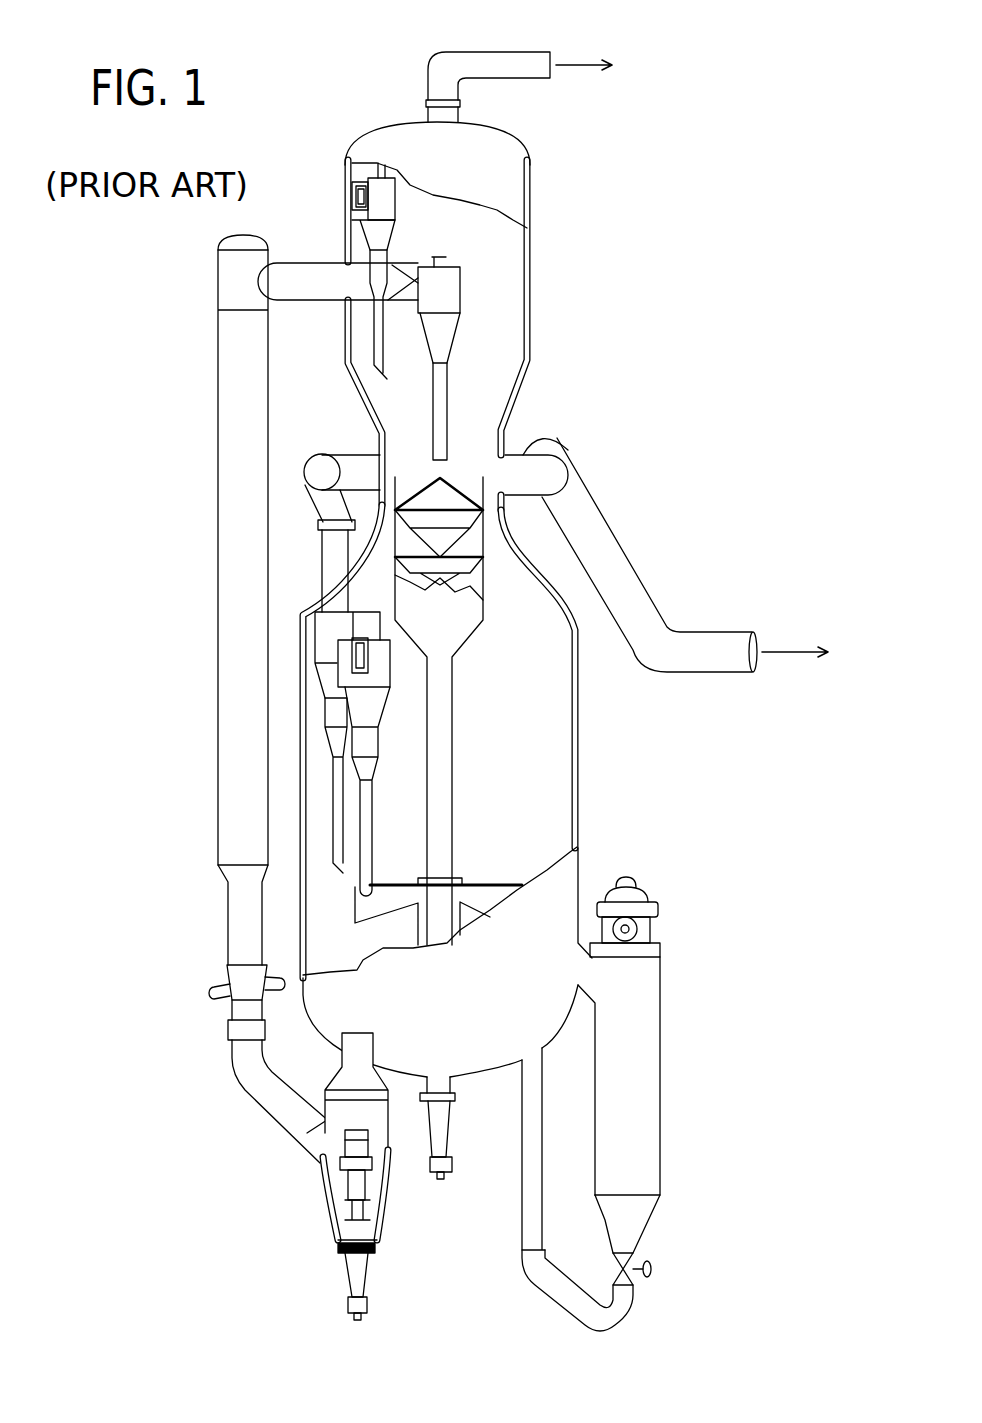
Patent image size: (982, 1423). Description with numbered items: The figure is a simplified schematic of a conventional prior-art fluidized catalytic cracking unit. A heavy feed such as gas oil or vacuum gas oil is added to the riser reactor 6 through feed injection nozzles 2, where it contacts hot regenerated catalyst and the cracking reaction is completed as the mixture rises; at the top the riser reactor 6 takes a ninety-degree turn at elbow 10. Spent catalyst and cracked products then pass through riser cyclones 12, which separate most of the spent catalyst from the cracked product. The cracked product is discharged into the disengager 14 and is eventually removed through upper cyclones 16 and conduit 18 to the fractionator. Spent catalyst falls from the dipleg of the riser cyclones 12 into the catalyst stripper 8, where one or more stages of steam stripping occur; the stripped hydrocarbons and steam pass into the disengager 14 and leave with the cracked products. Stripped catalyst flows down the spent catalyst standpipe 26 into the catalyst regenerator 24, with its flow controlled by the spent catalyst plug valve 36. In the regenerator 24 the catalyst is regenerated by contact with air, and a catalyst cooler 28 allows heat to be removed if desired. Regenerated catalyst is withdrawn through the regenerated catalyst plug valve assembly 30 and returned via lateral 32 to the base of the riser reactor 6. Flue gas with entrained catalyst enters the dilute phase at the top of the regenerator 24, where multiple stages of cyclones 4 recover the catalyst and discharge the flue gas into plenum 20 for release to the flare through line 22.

The feed injection nozzles 2 is at (210, 985).
The cyclones 4 is at (323, 685).
The riser reactor 6 is at (228, 615).
The catalyst stripper 8 is at (390, 543).
The elbow 10 is at (217, 283).
The riser cyclones 12 is at (452, 302).
The disengager 14 is at (488, 245).
The upper cyclones 16 is at (343, 218).
The conduit 18 is at (507, 52).
The plenum 20 is at (548, 467).
The line 22 is at (696, 555).
The catalyst regenerator 24 is at (580, 735).
The spent catalyst standpipe 26 is at (455, 826).
The catalyst cooler 28 is at (660, 1035).
The regenerated catalyst plug valve assembly 30 is at (332, 1207).
The lateral 32 is at (258, 1095).
The spent catalyst plug valve 36 is at (450, 1090).